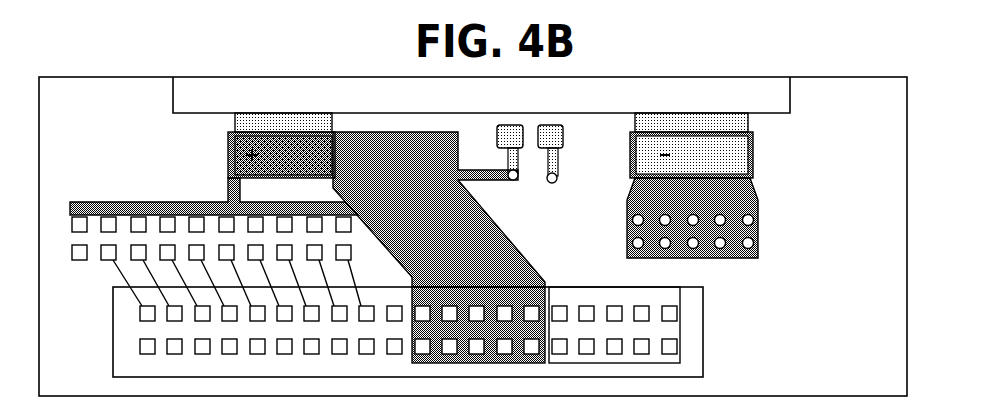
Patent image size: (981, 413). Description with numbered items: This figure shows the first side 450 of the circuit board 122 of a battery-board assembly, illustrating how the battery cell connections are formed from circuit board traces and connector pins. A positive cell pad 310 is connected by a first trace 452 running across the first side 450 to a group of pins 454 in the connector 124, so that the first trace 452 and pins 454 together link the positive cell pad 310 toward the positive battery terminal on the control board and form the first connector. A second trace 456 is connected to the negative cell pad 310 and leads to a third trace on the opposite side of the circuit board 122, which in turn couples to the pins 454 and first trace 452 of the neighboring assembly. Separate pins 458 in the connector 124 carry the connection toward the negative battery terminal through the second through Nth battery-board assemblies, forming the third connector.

The circuit board 122 is at (535, 79).
The connector 124 is at (452, 332).
The cell pad 310 is at (235, 150).
The first side 450 is at (873, 354).
The first trace 452 is at (492, 220).
The pins 454 is at (504, 318).
The second trace 456 is at (758, 228).
The pins 458 is at (677, 313).